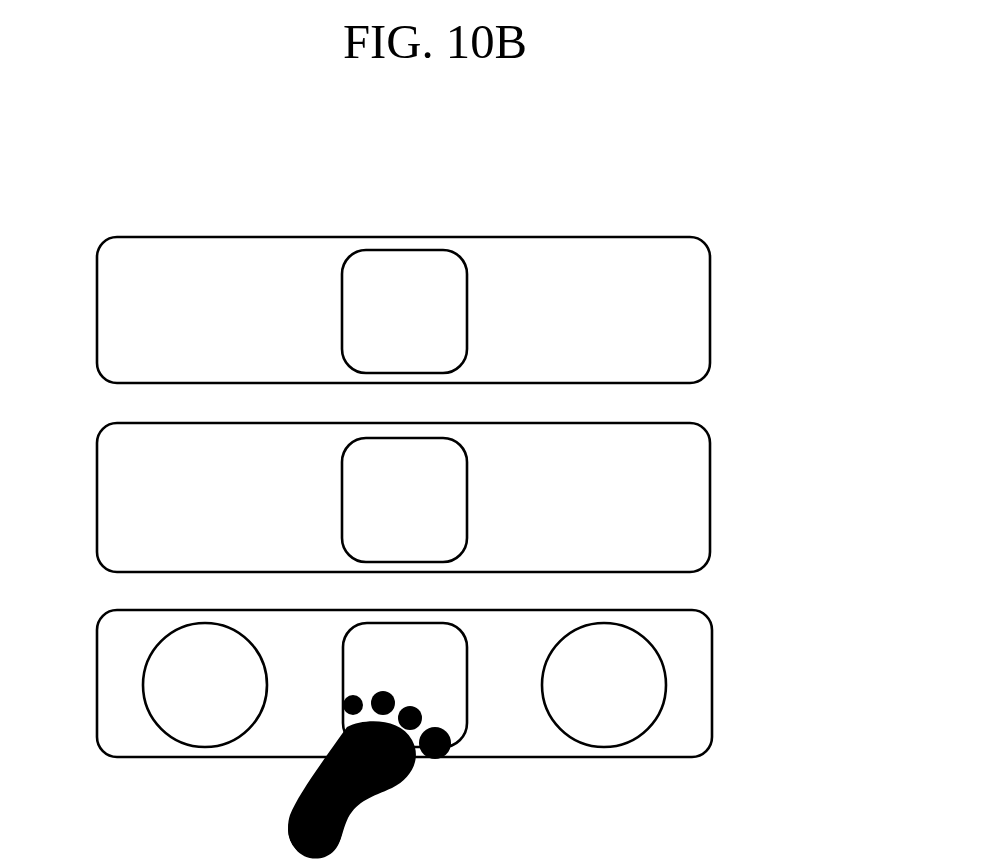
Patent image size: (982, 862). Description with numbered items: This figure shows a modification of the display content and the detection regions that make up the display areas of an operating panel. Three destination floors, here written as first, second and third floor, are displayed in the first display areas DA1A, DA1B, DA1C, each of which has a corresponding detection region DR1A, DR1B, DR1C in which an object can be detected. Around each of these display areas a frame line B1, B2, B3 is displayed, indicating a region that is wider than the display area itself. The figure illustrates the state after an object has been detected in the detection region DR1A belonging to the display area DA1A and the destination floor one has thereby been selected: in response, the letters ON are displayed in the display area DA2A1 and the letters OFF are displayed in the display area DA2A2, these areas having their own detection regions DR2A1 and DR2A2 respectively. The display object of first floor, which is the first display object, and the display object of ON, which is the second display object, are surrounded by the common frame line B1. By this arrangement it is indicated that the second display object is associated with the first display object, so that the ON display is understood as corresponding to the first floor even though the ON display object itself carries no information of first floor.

The frame line B3 is at (710, 292).
The frame line B2 is at (710, 480).
The common frame line B1 is at (712, 665).
The detection region DR1C is at (499, 286).
The first display area DA1C is at (462, 263).
The detection region DR1B is at (499, 474).
The first display area DA1B is at (462, 451).
The detection region DR1A is at (500, 660).
The first display area DA1A is at (462, 636).
The detection region DR2A2 is at (199, 739).
The display area DA2A2 is at (194, 747).
The detection region DR2A1 is at (604, 740).
The display area DA2A1 is at (604, 747).